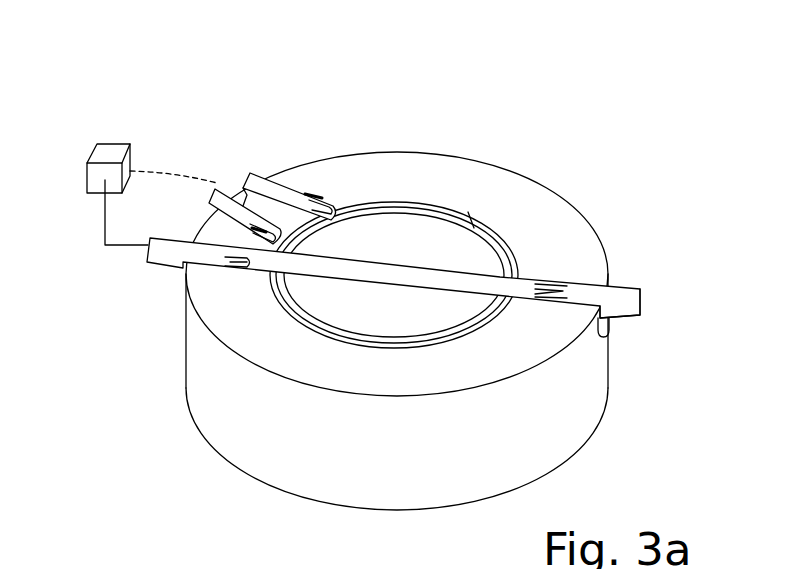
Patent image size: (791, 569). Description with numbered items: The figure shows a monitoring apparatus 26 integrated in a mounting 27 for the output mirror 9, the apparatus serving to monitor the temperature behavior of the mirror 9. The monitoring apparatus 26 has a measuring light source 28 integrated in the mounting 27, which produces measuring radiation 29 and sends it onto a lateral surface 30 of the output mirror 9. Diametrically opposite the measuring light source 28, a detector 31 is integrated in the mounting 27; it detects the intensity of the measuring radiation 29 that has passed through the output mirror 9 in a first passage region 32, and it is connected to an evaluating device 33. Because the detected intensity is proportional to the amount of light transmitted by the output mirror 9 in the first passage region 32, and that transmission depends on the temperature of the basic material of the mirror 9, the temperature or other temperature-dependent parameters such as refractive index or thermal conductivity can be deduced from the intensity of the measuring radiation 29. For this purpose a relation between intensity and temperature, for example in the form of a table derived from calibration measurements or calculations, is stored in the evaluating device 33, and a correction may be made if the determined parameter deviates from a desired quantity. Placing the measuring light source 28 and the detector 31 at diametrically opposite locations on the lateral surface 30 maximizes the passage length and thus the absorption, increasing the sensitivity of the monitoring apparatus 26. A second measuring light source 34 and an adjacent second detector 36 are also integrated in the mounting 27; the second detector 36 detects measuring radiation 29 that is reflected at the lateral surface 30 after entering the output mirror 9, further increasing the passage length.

The output mirror 9 is at (433, 230).
The monitoring apparatus 26 is at (219, 130).
The mounting 27 is at (603, 243).
The measuring light source 28 is at (633, 290).
The measuring radiation 29 is at (581, 253).
The lateral surface 30 is at (473, 221).
The detector 31 is at (176, 249).
The first passage region 32 is at (390, 270).
The evaluating device 33 is at (86, 175).
The second measuring light source 34 is at (278, 187).
The second detector 36 is at (233, 190).